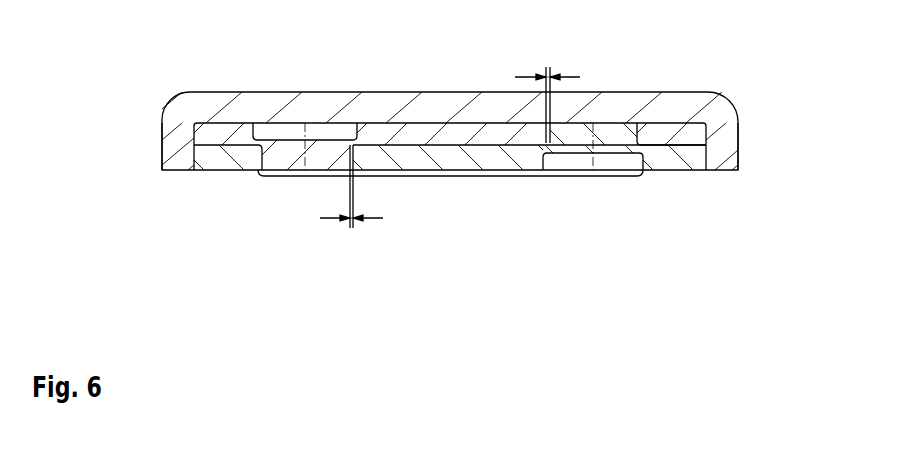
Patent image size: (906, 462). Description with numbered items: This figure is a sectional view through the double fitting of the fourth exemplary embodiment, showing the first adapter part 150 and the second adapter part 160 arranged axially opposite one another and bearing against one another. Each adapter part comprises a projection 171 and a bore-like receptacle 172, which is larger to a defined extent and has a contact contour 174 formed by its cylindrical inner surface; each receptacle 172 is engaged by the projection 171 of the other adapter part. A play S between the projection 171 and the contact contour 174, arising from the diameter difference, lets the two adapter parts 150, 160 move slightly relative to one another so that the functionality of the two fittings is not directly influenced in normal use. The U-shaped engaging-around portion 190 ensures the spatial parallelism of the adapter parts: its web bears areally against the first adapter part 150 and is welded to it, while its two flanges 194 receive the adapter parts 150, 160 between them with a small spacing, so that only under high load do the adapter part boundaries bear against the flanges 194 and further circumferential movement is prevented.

The first adapter part 150 is at (383, 130).
The second adapter part 160 is at (672, 163).
The projection 171 is at (303, 158).
The bore-like receptacle 172 is at (258, 165).
The contact contour 174 is at (258, 152).
The engaging-around portion 190 is at (183, 113).
The flange 194 is at (173, 160).
The play s is at (383, 218).